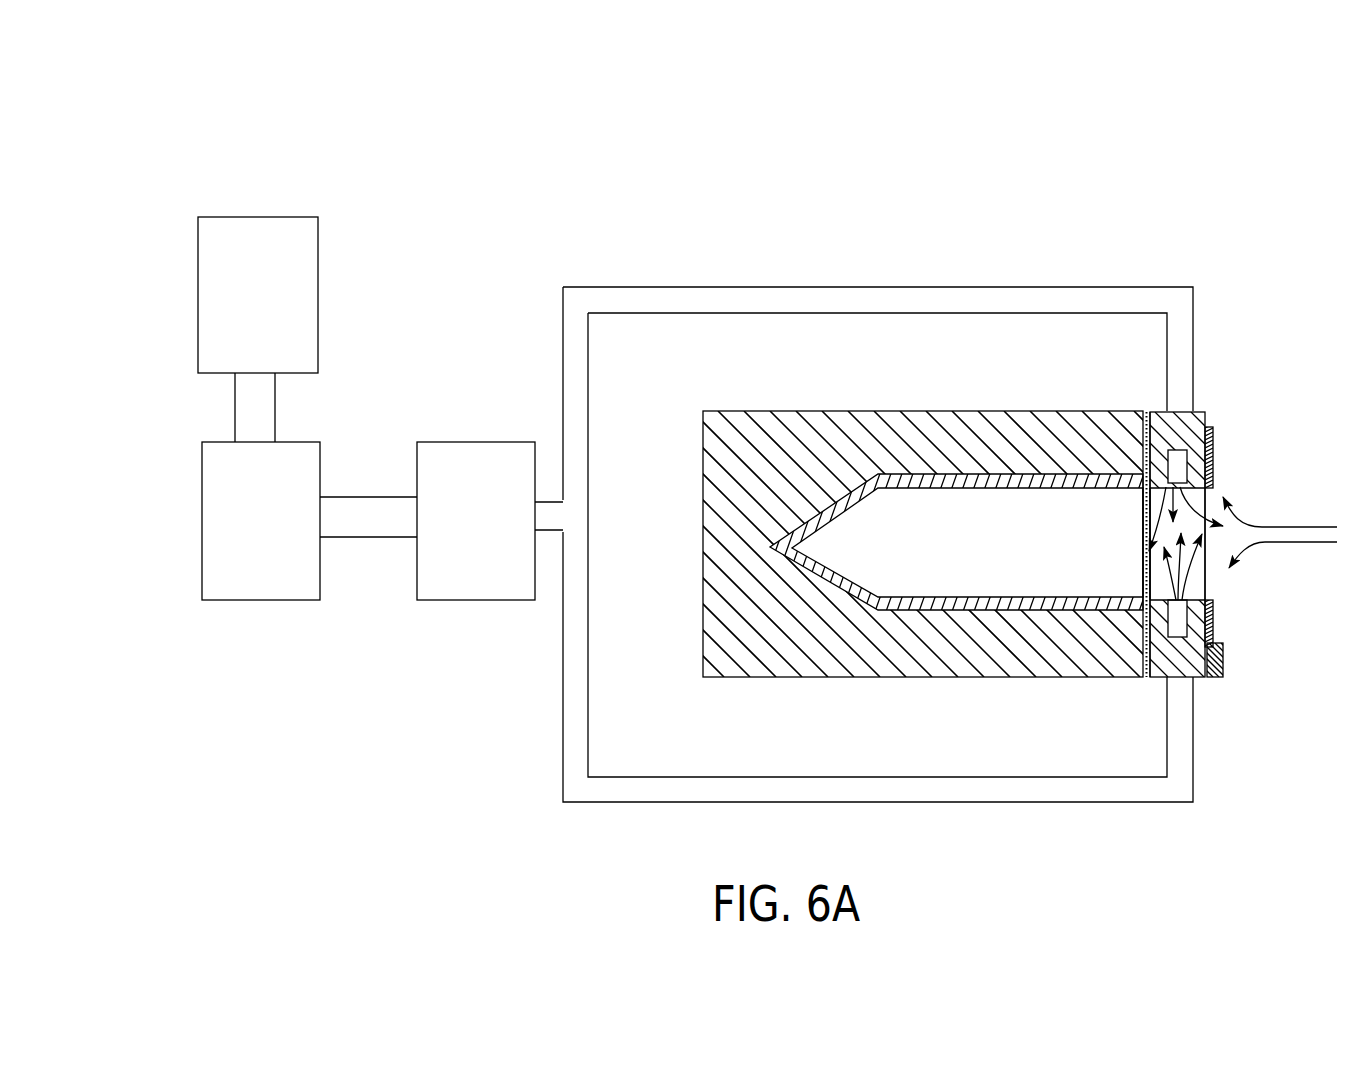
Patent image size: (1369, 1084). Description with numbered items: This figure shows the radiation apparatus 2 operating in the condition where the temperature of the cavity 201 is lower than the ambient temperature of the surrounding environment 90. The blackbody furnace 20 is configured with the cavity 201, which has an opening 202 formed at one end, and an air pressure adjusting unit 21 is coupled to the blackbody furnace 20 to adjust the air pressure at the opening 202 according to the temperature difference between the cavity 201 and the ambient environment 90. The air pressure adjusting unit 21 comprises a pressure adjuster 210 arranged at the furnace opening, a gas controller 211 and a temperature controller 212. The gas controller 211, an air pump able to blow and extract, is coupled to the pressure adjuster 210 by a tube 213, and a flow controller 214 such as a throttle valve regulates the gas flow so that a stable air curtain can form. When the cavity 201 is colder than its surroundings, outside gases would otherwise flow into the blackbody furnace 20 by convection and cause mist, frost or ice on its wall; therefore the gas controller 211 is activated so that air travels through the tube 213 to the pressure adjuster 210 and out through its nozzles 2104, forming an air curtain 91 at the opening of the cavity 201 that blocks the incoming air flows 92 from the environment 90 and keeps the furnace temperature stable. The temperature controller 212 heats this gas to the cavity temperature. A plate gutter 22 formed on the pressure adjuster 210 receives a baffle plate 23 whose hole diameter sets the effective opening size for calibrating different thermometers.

The plasma apparatus 2 is at (170, 189).
The blackbody furnace 20 is at (698, 419).
The cavity 201 is at (964, 558).
The opening 202 is at (1138, 560).
The air pressure adjusting unit 21 is at (1214, 391).
The pressure adjuster 210 is at (1199, 682).
The nozzles 2104 is at (1182, 462).
The gas controller 211 is at (310, 257).
The temperature controller 212 is at (218, 490).
The tube 213 is at (560, 340).
The flow controller 214 is at (443, 450).
The plate gutter 22 is at (1222, 670).
The baffle plate 23 is at (1212, 617).
The ambient environment 90 is at (1335, 272).
The air curtain 91 is at (1165, 520).
The gas flow 92 is at (1265, 527).